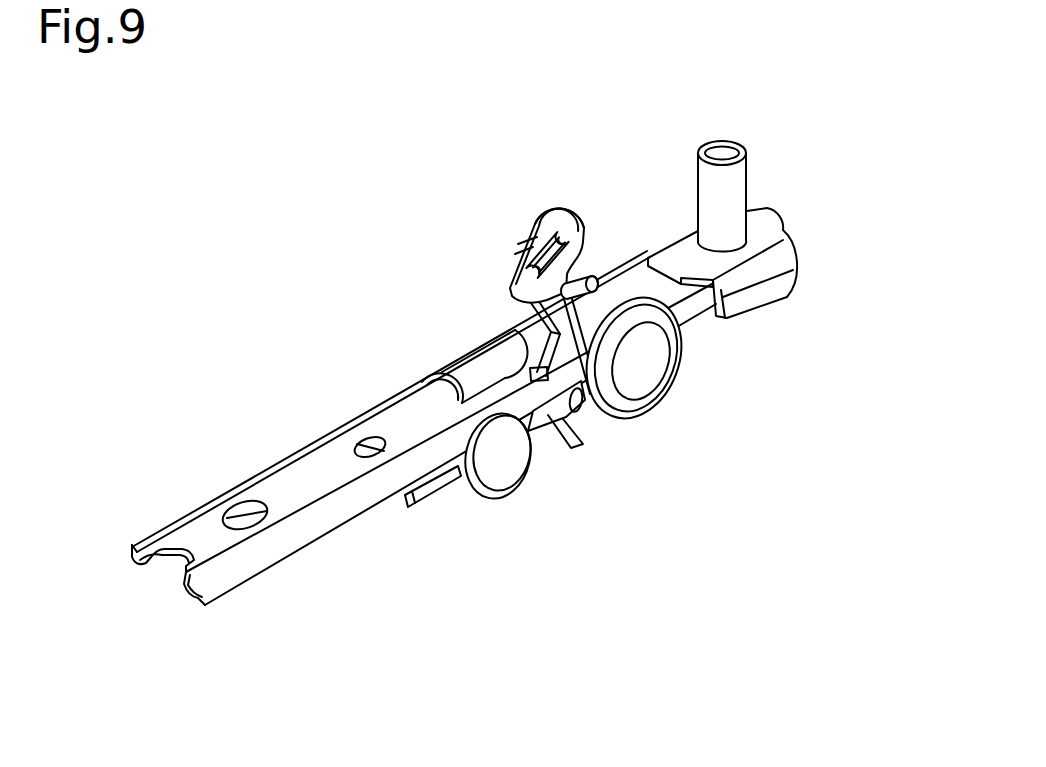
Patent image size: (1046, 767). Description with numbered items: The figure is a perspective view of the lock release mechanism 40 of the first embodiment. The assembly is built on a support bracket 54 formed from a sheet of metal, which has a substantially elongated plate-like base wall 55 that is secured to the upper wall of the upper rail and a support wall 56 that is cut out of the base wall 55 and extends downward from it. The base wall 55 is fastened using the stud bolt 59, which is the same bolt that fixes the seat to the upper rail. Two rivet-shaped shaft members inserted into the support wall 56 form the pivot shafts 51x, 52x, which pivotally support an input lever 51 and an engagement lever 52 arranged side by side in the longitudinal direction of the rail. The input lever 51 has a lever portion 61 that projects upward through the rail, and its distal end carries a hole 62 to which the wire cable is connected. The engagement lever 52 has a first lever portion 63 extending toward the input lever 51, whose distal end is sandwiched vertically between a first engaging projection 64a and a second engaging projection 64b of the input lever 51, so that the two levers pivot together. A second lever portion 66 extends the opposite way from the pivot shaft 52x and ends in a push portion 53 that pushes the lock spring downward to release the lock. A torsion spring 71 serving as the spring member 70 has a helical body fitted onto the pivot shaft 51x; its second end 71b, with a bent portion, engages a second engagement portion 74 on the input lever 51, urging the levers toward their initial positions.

The lock release mechanism 40 is at (489, 367).
The input lever 51 is at (585, 181).
The engagement lever 52 is at (424, 428).
The push portion 53 is at (456, 522).
The support bracket 54 is at (278, 462).
The base wall 55 is at (330, 452).
The support wall 56 is at (452, 336).
The stud bolt 59 is at (746, 157).
The lever portion 61 is at (508, 240).
The hole 62 is at (531, 264).
The first lever portion 63 is at (629, 419).
The first engaging projection 64a is at (572, 438).
The second engaging projection 64b is at (530, 370).
The second lever portion 66 is at (413, 505).
The spring member 70 is at (722, 263).
The torsion spring 71 is at (725, 357).
The second end 71b is at (623, 287).
The second engagement portion 74 is at (598, 274).
The pivot shaft 51x is at (697, 367).
The pivot shaft 52x is at (553, 469).